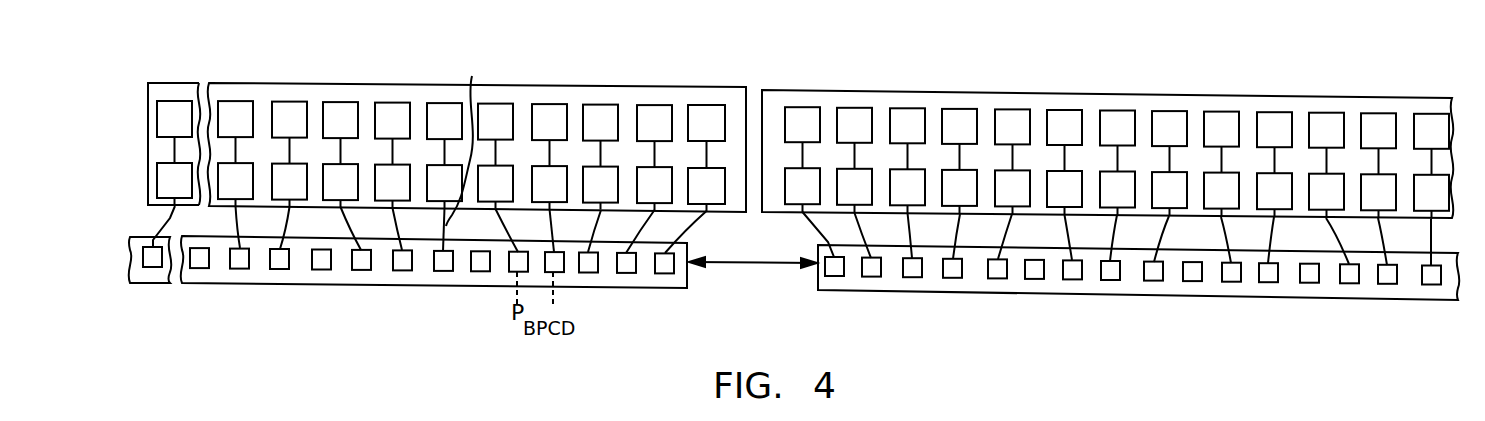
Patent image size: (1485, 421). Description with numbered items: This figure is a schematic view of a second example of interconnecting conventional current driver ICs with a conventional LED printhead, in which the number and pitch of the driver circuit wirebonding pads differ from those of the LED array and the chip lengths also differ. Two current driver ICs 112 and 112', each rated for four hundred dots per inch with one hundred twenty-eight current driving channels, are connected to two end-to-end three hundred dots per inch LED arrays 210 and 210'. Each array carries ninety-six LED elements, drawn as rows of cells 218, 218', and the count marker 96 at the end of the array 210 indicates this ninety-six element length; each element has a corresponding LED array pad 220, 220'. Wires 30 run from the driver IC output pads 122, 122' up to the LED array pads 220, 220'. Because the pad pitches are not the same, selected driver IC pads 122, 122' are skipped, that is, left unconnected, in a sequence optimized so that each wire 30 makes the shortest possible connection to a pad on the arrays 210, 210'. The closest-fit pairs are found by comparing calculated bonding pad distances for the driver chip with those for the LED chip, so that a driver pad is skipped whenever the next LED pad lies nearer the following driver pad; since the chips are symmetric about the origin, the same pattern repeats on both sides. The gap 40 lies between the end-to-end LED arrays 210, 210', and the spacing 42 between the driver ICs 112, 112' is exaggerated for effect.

The LED chip array 210 is at (477, 132).
The memory cell 218 is at (372, 92).
The wires 30 is at (473, 135).
The LED array pad 220 is at (535, 123).
The gap between array blocks 40 is at (755, 96).
The cell block 96 is at (706, 154).
The memory cell 218' is at (811, 95).
The LED array pad 220' is at (850, 126).
The LED chip array 210' is at (1107, 133).
The current driver IC 112 is at (434, 284).
The driver IC bonding pads 122 is at (500, 295).
The spacing 42 is at (759, 265).
The driver IC bonding pads 122' is at (852, 296).
The current driver IC 112' is at (1138, 290).